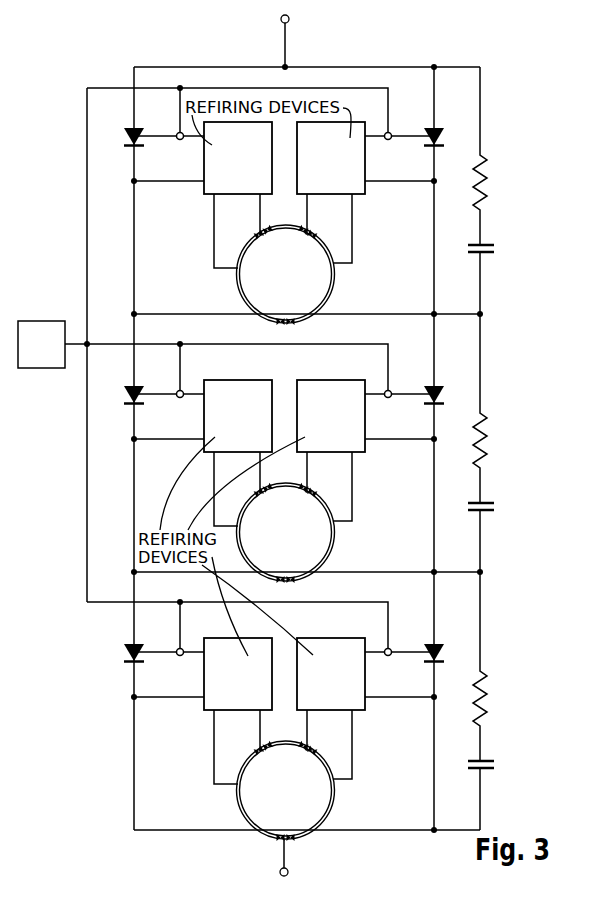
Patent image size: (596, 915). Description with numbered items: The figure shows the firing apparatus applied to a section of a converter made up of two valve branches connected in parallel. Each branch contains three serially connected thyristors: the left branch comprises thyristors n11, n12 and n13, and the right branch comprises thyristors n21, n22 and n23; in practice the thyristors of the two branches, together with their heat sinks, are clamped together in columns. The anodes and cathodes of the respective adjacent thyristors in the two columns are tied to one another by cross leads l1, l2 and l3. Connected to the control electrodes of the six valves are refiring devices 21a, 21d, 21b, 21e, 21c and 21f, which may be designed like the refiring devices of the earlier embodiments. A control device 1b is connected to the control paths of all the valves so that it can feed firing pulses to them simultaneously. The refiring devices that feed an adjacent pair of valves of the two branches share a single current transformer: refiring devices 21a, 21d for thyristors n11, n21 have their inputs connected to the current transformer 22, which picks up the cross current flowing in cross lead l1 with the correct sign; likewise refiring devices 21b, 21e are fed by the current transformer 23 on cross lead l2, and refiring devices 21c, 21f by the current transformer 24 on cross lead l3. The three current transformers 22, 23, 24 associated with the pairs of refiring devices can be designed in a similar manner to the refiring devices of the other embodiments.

The control device 1b is at (41, 344).
The thyristor n11 is at (139, 133).
The thyristor n21 is at (430, 132).
The thyristor n12 is at (139, 391).
The thyristor n22 is at (430, 390).
The thyristor n13 is at (139, 649).
The thyristor n23 is at (430, 648).
The refiring device 21a is at (238, 158).
The refiring device 21d is at (331, 158).
The refiring device 21b is at (238, 416).
The refiring device 21e is at (331, 416).
The refiring device 21c is at (238, 674).
The refiring device 21f is at (331, 674).
The current transformer 22 is at (274, 286).
The current transformer 23 is at (274, 544).
The current transformer 24 is at (274, 802).
The cross lead l1 is at (403, 313).
The cross lead l2 is at (403, 571).
The cross lead l3 is at (403, 829).